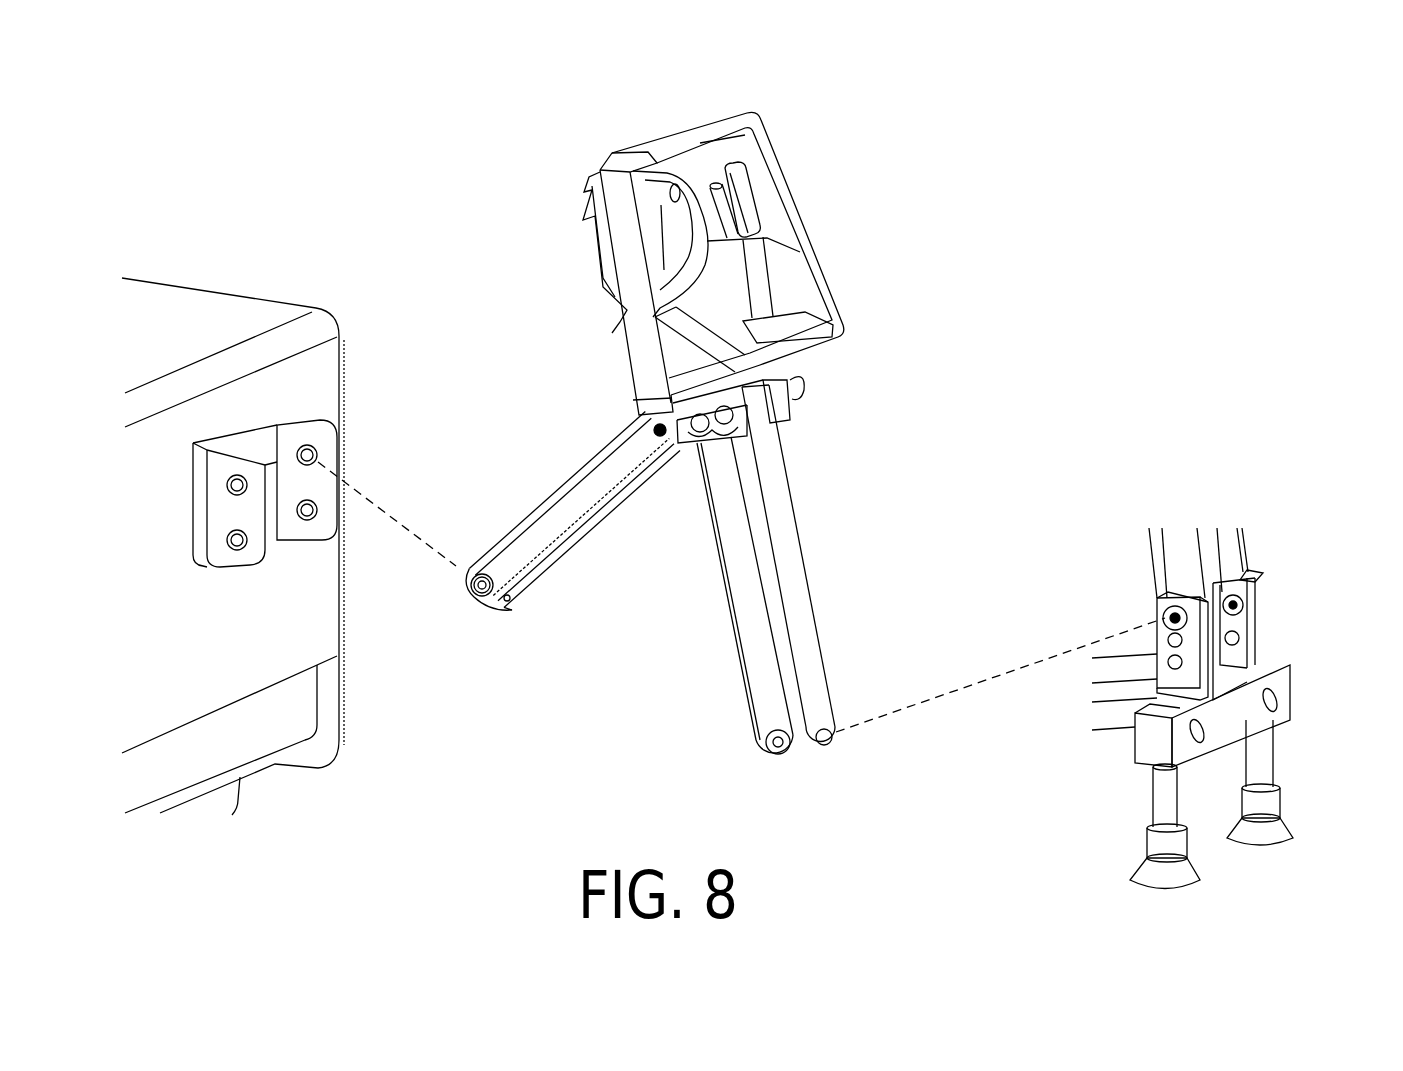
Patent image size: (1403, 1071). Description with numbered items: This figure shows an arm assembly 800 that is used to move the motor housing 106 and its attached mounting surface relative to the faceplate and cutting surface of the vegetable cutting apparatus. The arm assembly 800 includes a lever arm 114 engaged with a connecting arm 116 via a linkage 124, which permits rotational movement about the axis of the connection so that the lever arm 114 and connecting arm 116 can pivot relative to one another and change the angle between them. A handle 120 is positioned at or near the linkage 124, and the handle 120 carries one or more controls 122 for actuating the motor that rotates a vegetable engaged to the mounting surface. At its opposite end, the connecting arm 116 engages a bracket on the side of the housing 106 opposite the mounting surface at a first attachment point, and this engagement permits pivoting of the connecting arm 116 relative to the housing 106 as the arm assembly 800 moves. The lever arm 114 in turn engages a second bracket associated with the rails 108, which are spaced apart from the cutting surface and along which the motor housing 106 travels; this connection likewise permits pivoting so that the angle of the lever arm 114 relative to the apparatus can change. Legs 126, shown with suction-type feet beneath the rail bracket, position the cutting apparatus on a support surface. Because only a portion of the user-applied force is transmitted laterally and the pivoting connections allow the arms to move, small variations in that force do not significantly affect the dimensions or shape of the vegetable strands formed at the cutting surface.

The motor housing 106 is at (228, 303).
The handle 120 is at (675, 134).
The controls 122 is at (731, 208).
The connecting arm 116 is at (520, 523).
The linkage 124 is at (676, 430).
The lever arm 114 is at (808, 620).
The rails 108 is at (1112, 720).
The legs 126 is at (1265, 802).
The arm assembly 800 is at (1130, 118).